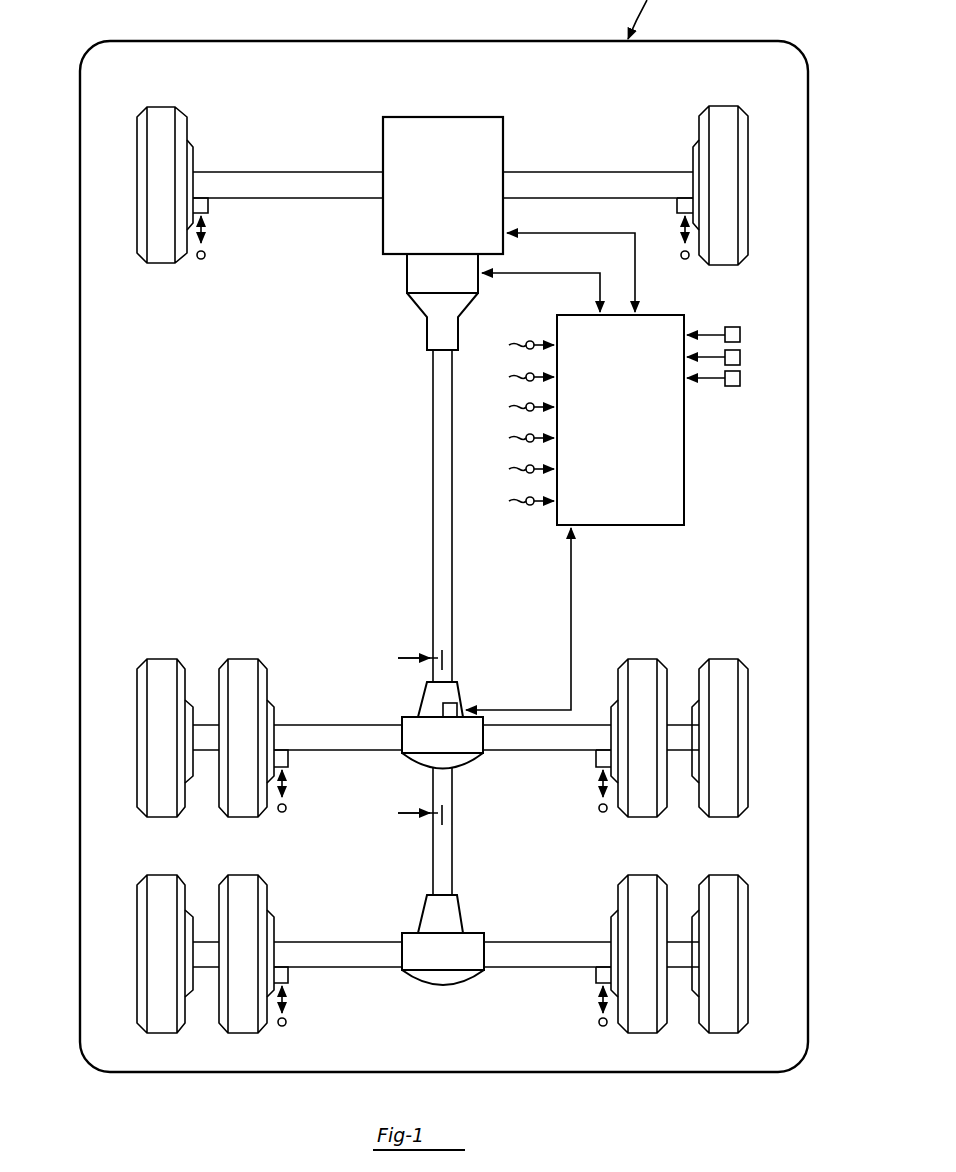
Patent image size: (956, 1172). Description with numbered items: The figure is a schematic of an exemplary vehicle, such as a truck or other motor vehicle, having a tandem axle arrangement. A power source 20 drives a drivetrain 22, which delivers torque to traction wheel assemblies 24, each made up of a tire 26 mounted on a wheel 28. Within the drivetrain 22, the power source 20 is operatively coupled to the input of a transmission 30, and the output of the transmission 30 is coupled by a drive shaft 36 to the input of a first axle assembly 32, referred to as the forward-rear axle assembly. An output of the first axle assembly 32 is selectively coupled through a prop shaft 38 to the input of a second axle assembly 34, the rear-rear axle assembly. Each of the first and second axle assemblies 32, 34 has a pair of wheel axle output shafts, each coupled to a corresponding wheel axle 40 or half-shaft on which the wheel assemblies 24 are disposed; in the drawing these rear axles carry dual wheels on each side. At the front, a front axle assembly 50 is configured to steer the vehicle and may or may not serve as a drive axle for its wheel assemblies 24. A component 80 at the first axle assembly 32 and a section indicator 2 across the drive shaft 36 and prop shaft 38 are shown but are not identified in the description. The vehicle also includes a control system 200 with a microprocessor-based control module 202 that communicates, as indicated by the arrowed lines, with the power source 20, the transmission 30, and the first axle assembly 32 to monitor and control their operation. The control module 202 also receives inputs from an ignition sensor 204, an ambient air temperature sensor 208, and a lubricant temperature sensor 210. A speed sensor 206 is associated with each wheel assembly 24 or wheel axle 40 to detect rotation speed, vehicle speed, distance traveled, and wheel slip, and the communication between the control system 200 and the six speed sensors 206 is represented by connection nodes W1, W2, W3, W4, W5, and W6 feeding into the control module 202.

The power source 20 is at (454, 197).
The transmission 30 is at (454, 286).
The drivetrain 22 is at (412, 500).
The drive shaft 36 is at (447, 601).
The prop shaft 38 is at (447, 841).
The first axle assembly 32 is at (454, 751).
The second axle assembly 34 is at (454, 967).
The wheel axle 40 is at (383, 749).
The differential sensor 80 is at (447, 703).
The traction wheel assembly 24 is at (140, 104).
The tire 26 is at (162, 256).
The wheel 28 is at (191, 153).
The front axle assembly 50 is at (128, 178).
The speed sensor 206 is at (208, 205).
The control module 202 is at (636, 422).
The ignition sensor 204 is at (740, 335).
The ambient air temperature sensor 208 is at (740, 357).
The lubricant temperature sensor 210 is at (740, 378).
The control system 200 is at (701, 485).
The section line for FIG. 2 is at (407, 740).
The connection node W1 is at (204, 250).
The connection node W2 is at (688, 250).
The connection node W3 is at (285, 804).
The connection node W4 is at (606, 804).
The connection node W5 is at (285, 1019).
The connection node W6 is at (606, 1019).